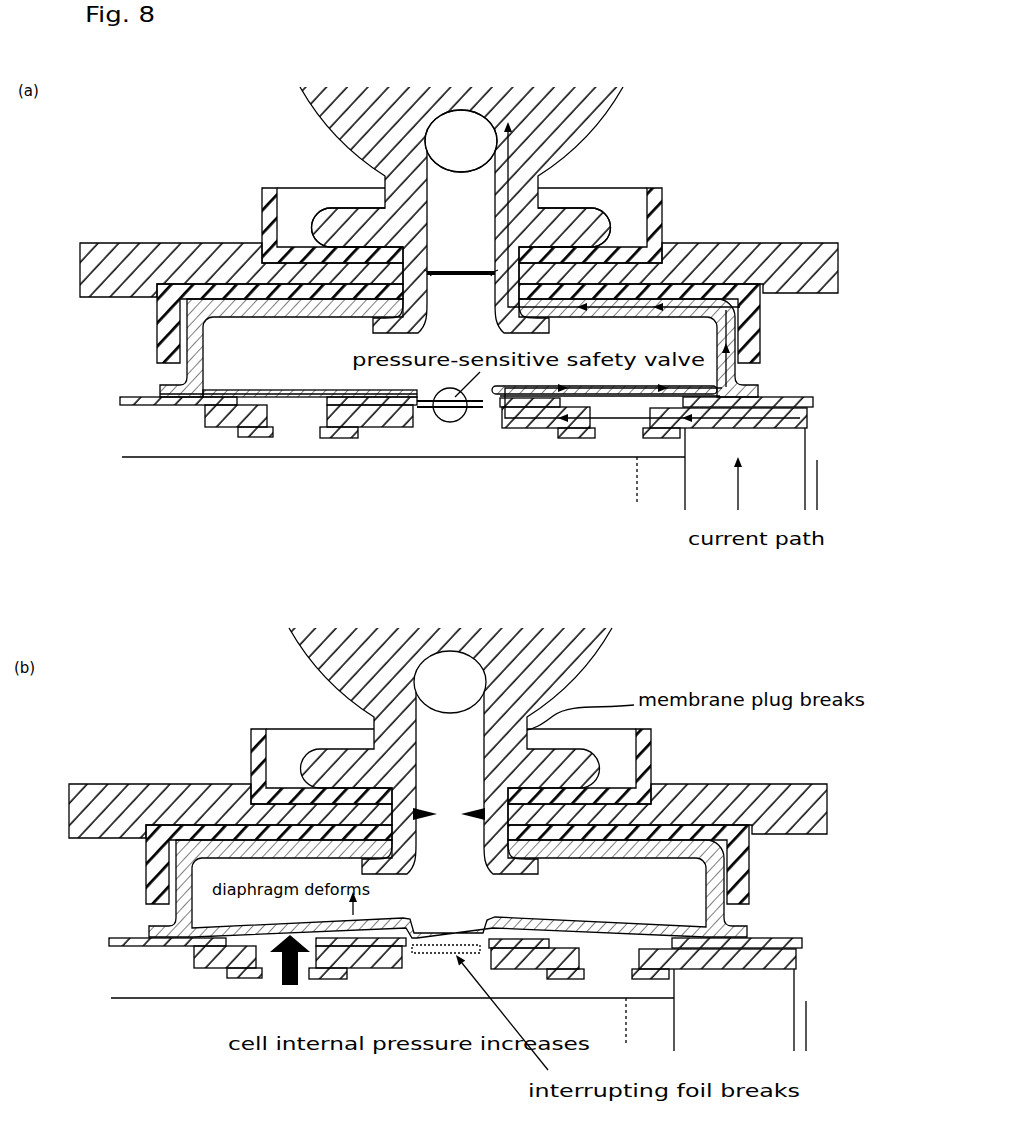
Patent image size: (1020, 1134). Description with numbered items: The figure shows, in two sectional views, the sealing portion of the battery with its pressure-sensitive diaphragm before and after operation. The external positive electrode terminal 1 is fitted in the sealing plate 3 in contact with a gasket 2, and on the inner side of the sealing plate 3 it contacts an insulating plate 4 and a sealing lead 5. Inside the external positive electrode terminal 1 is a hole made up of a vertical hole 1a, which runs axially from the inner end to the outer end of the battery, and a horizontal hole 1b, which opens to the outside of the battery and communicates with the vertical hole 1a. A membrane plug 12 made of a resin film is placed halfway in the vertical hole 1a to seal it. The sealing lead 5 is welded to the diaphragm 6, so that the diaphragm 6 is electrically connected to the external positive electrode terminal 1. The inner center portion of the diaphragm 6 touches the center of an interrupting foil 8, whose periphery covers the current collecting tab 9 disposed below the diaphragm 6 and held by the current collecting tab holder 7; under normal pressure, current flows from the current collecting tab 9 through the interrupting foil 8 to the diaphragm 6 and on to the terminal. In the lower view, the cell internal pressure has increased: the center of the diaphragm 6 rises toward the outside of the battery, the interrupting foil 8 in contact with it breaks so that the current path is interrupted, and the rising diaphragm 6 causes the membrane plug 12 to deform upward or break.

The external positive electrode terminal 1 is at (345, 144).
The vertical hole 1a is at (477, 203).
The horizontal hole 1b is at (488, 124).
The gasket 2 is at (262, 192).
The sealing plate 3 is at (195, 243).
The insulating plate 4 is at (157, 330).
The sealing lead 5 is at (187, 367).
The pressure-sensitive elastic element (diaphragm) 6 is at (368, 393).
The current collecting tab holder 7 is at (135, 400).
The interrupting foil 8 is at (470, 418).
The current collecting tab 9 is at (367, 410).
The membrane plug 12 is at (472, 280).